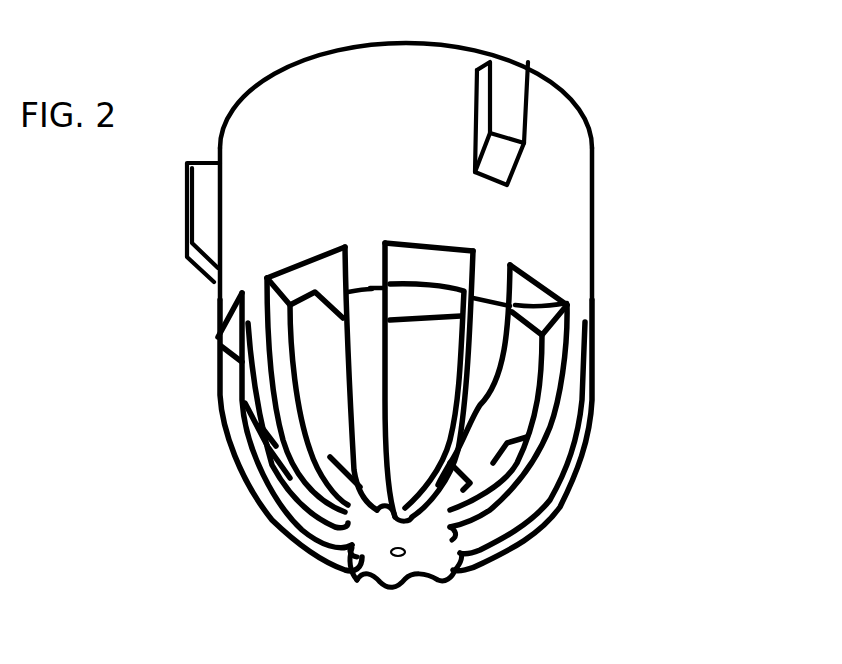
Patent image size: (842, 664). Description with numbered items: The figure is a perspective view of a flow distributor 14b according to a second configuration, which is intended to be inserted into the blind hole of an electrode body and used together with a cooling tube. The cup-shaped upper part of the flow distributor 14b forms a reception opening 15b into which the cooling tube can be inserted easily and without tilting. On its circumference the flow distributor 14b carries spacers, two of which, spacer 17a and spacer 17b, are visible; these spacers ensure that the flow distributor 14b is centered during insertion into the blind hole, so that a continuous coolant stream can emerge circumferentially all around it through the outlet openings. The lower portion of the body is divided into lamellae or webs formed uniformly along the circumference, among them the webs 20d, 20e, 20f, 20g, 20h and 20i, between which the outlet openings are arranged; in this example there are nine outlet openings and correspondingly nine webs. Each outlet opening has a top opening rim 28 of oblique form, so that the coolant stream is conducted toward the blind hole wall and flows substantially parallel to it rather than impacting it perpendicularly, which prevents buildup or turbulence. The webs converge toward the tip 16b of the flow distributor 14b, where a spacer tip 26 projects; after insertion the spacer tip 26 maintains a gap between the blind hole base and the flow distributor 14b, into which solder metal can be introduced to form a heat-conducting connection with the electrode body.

The flow distributor 14b is at (707, 150).
The reception opening 15b is at (348, 36).
The spacer 17a is at (510, 108).
The spacer 17b is at (197, 206).
The top opening rim 28 is at (298, 280).
The web 20d is at (228, 482).
The web 20e is at (263, 380).
The web 20f is at (363, 343).
The web 20g is at (482, 380).
The web 20h is at (547, 443).
The web 20i is at (547, 523).
The tip 16b is at (377, 545).
The spacer tip 26 is at (400, 558).